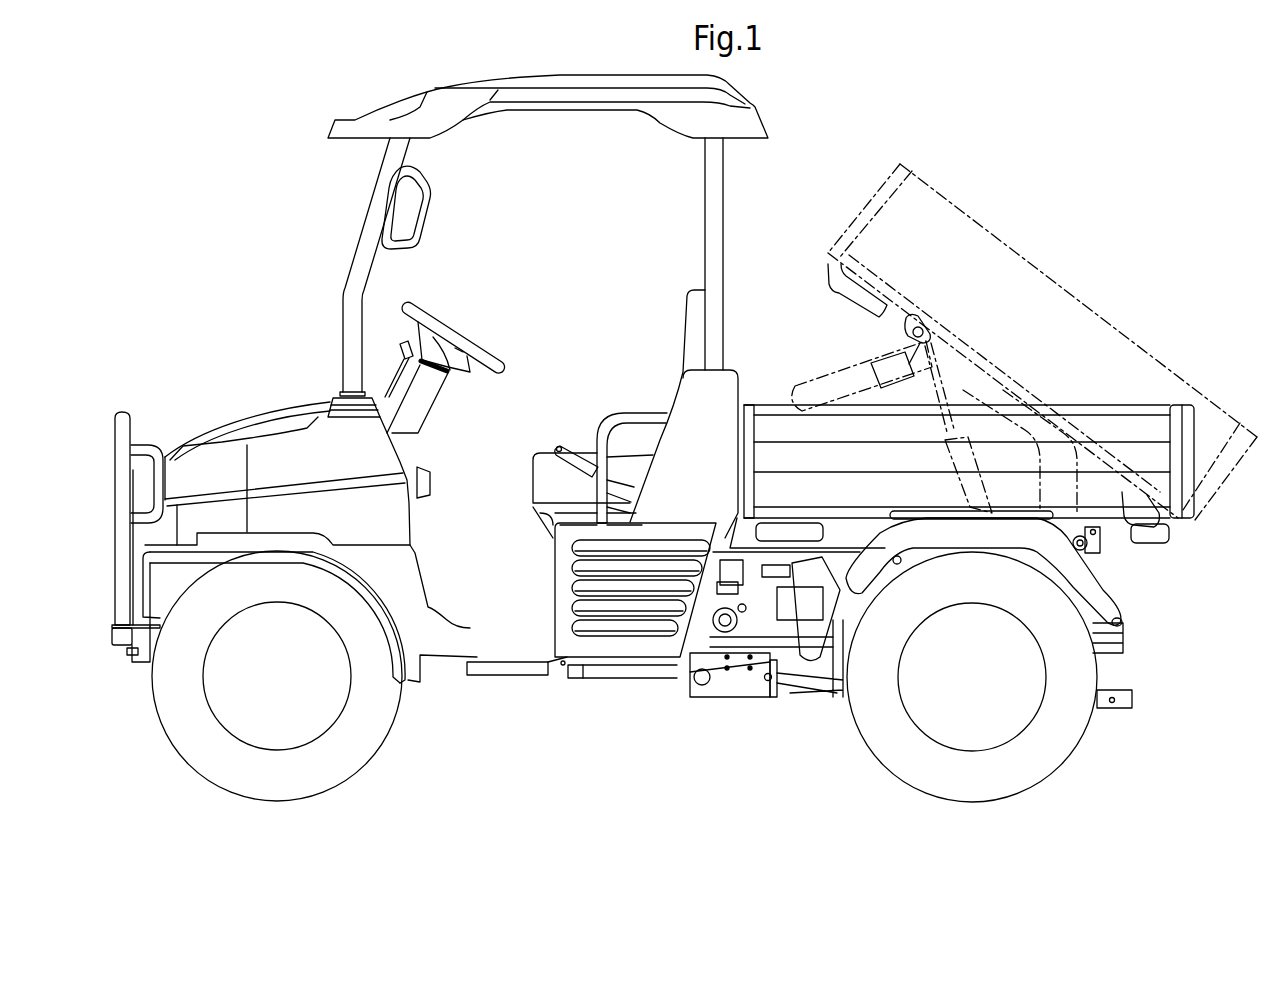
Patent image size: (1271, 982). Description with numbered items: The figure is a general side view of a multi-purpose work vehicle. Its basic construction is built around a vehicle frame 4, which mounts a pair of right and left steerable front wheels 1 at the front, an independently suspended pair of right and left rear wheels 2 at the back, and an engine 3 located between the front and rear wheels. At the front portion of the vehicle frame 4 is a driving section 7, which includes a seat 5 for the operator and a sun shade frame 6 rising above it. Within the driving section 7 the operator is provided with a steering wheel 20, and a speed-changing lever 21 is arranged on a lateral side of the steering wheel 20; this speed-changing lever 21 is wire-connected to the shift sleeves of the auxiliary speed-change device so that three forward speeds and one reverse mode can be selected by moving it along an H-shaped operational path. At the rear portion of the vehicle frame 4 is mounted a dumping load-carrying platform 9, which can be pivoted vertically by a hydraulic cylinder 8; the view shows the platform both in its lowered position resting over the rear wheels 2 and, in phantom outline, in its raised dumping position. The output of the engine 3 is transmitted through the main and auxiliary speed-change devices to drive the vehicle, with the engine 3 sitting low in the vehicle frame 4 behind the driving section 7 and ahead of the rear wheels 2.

The front wheels 1 is at (358, 762).
The rear wheels 2 is at (885, 757).
The engine 3 is at (760, 612).
The vehicle frame 4 is at (845, 528).
The seat 5 is at (546, 452).
The sun shade frame 6 is at (717, 197).
The driving section 7 is at (413, 273).
The hydraulic cylinder 8 is at (945, 458).
The damping load-carrying platform 9 is at (1158, 426).
The steering wheel 20 is at (428, 317).
The speed-changing lever 21 is at (403, 352).